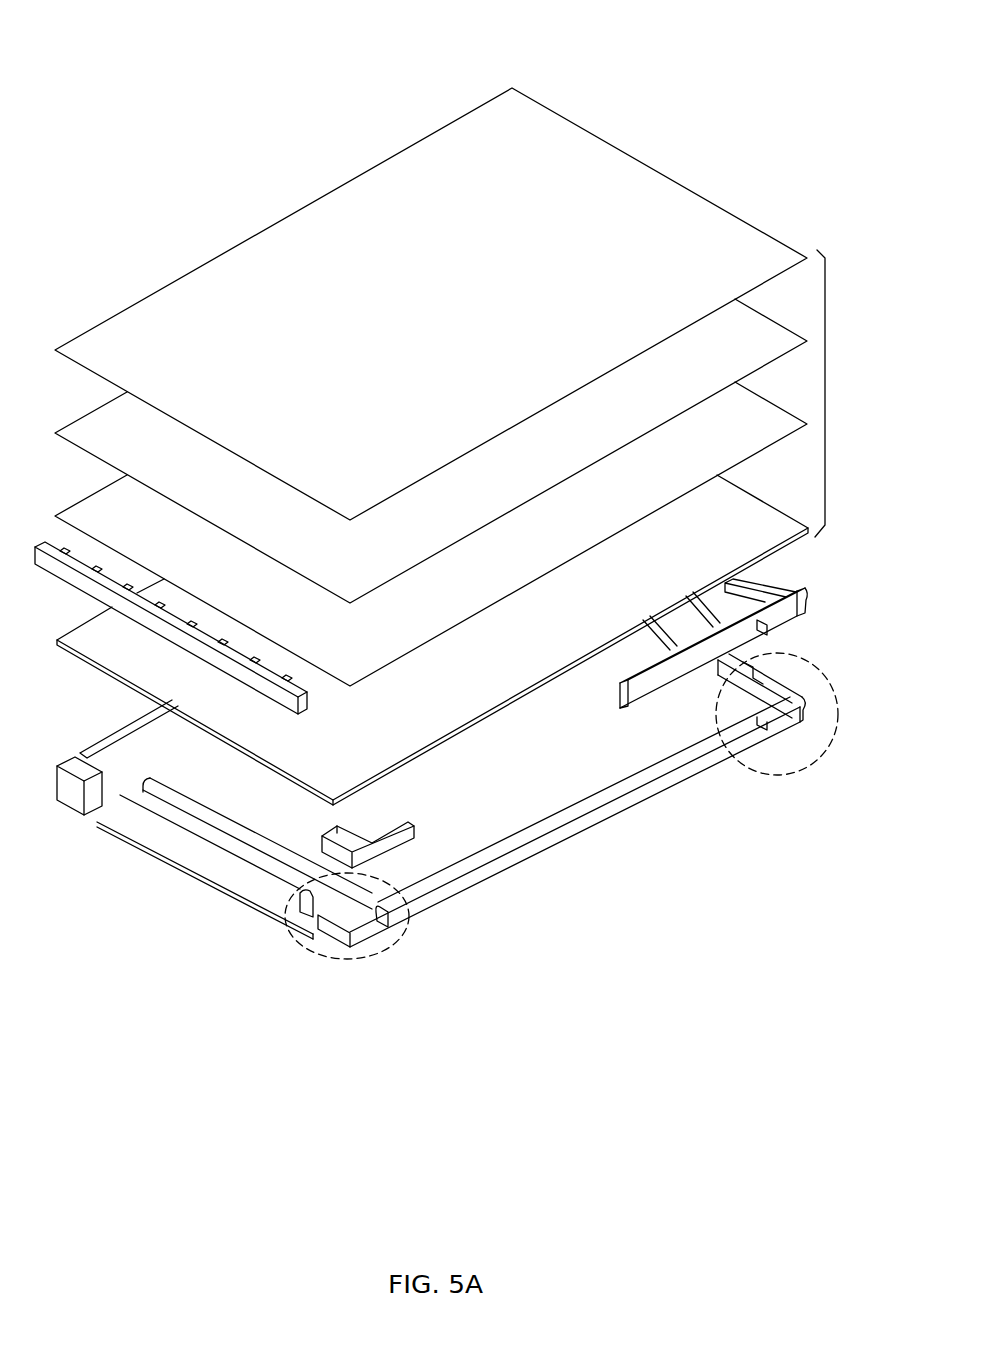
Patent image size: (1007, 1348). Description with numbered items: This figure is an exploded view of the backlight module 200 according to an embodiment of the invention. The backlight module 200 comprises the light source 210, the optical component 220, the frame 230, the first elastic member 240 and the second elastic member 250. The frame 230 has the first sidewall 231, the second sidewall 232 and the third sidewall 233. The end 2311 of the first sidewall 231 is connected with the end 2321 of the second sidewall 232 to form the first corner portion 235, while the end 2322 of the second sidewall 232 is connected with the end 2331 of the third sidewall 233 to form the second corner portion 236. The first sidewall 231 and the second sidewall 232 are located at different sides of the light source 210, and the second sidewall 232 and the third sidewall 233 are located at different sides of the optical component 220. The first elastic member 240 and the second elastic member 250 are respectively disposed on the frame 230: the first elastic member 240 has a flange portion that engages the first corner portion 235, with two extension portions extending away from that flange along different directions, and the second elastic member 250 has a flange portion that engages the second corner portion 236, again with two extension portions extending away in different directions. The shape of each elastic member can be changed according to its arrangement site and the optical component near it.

The backlight module 200 is at (160, 42).
The light source 210 is at (47, 562).
The optical component 220 is at (466, 446).
The frame 230 is at (474, 838).
The first sidewall 231 is at (234, 897).
The end of the first sidewall 2311 is at (297, 934).
The second sidewall 232 is at (575, 851).
The end of the second sidewall 2321 is at (387, 928).
The end of the second sidewall 2322 is at (764, 732).
The third sidewall 233 is at (804, 696).
The end of the third sidewall 2331 is at (790, 668).
The first corner portion 235 is at (335, 957).
The second corner portion 236 is at (805, 777).
The first elastic member 240 is at (306, 836).
The second elastic member 250 is at (806, 580).